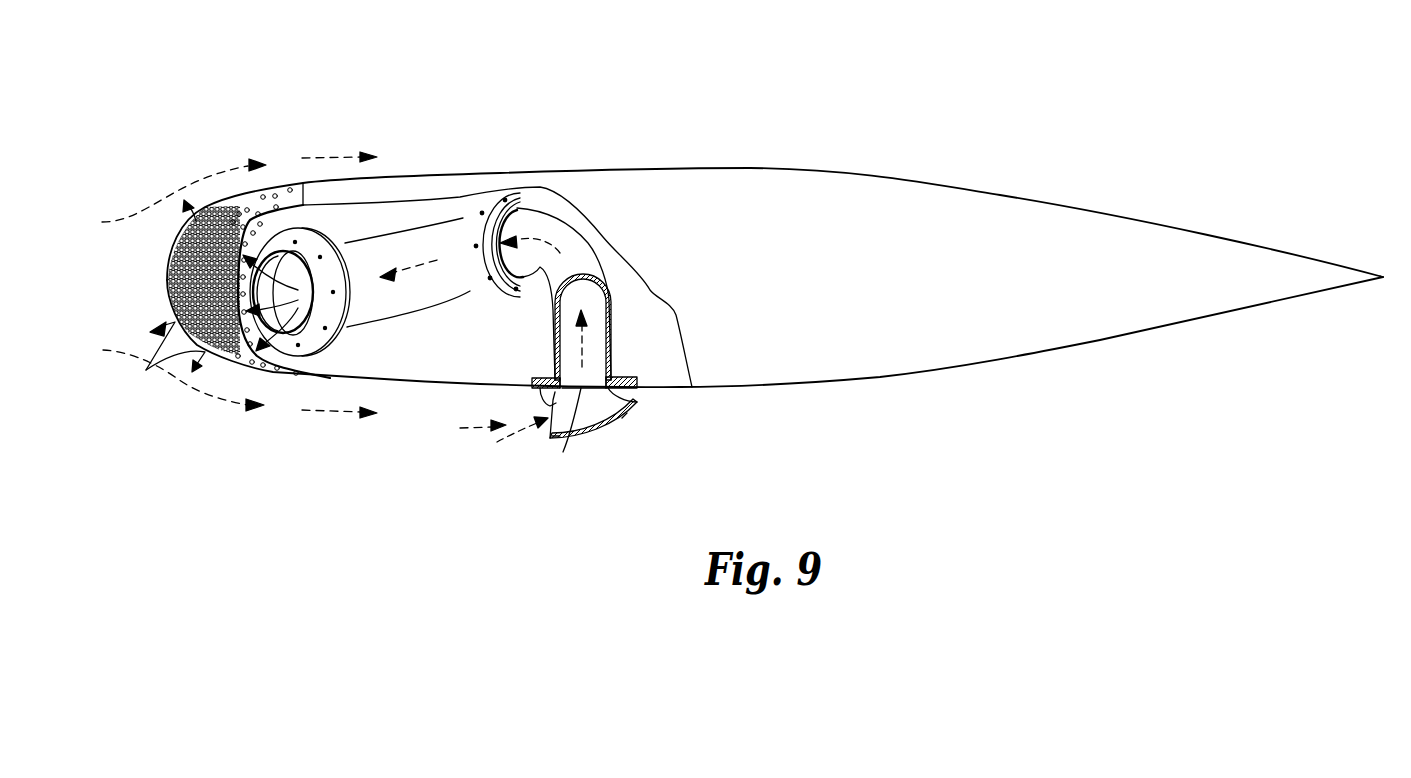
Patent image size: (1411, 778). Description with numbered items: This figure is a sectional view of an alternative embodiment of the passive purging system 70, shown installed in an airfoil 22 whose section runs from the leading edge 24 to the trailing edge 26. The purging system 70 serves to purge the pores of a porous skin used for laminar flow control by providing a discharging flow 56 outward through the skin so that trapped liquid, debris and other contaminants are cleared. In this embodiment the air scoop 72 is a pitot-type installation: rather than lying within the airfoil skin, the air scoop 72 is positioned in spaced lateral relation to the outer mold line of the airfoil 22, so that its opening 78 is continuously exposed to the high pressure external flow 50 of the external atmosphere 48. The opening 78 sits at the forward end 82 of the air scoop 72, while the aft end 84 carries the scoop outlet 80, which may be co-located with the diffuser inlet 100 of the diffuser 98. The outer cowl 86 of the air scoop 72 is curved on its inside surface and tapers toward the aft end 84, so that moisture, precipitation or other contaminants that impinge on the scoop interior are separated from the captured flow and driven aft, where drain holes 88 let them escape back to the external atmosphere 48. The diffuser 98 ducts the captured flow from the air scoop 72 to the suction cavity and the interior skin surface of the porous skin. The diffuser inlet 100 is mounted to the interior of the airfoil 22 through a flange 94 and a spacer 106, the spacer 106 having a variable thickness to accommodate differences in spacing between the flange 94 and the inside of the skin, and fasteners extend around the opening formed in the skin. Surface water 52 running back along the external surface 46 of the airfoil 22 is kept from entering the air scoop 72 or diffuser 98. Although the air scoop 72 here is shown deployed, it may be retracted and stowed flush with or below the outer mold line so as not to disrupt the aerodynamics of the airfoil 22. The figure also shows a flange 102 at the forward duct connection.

The airfoil 22 is at (794, 172).
The leading edge 24 is at (168, 276).
The trailing edge 26 is at (1383, 277).
The external surface 46 is at (738, 388).
The external atmosphere 48 is at (750, 276).
The high pressure external flow 50 is at (196, 181).
The surface water 52 is at (268, 186).
The discharging flow 56 is at (196, 221).
The purging system 70 is at (546, 312).
The air scoop 72 is at (560, 447).
The opening 78 is at (548, 411).
The scoop outlet 80 is at (563, 452).
The forward end 82 is at (550, 440).
The aft end 84 is at (627, 413).
The outer cowl 86 is at (593, 433).
The drain holes 88 is at (640, 399).
The flange 94 is at (517, 200).
The diffuser 98 is at (580, 230).
The diffuser inlet 100 is at (597, 402).
The flange 102 is at (307, 262).
The spacer 106 is at (637, 384).